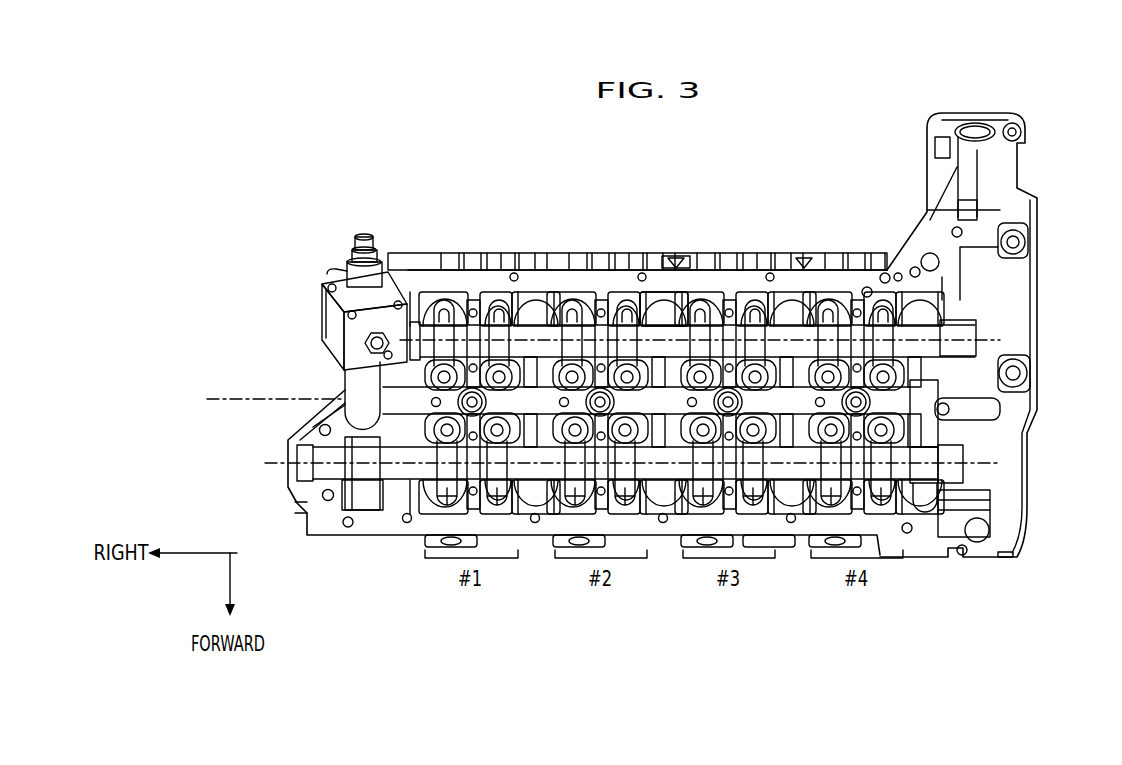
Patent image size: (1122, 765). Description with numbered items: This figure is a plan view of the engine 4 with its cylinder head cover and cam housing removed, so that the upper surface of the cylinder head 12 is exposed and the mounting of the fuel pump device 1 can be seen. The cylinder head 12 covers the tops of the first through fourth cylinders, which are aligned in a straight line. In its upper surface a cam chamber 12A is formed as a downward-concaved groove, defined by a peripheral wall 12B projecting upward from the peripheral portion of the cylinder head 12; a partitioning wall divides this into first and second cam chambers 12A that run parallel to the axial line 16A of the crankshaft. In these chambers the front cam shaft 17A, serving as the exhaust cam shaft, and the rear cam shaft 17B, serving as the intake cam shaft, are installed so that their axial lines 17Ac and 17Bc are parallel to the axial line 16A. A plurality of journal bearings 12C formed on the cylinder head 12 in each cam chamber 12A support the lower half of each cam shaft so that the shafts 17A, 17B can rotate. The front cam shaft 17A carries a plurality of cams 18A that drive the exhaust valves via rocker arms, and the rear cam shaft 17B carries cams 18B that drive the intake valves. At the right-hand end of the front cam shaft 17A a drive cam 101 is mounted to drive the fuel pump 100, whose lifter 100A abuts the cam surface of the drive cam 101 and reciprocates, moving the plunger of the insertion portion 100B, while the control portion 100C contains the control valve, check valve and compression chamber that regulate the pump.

The fuel pump device 1 is at (295, 350).
The engine 4 is at (882, 200).
The cylinder head 12 is at (786, 275).
The cam chamber 12A is at (680, 278).
The peripheral wall 12B is at (668, 282).
The journal bearings 12C is at (467, 303).
The axial line of the crankshaft 16A is at (250, 400).
The front cam shaft 17A is at (550, 512).
The axial line of the front cam shaft 17Ac is at (983, 465).
The rear cam shaft 17B is at (537, 328).
The axial line of the rear cam shaft 17Bc is at (985, 340).
The cams 18A is at (446, 506).
The cams 18B is at (445, 300).
The fuel pump 100 is at (307, 345).
The lifter 100A is at (288, 441).
The insertion portion 100B is at (345, 392).
The control portion 100C is at (330, 323).
The drive cam 101 is at (365, 498).